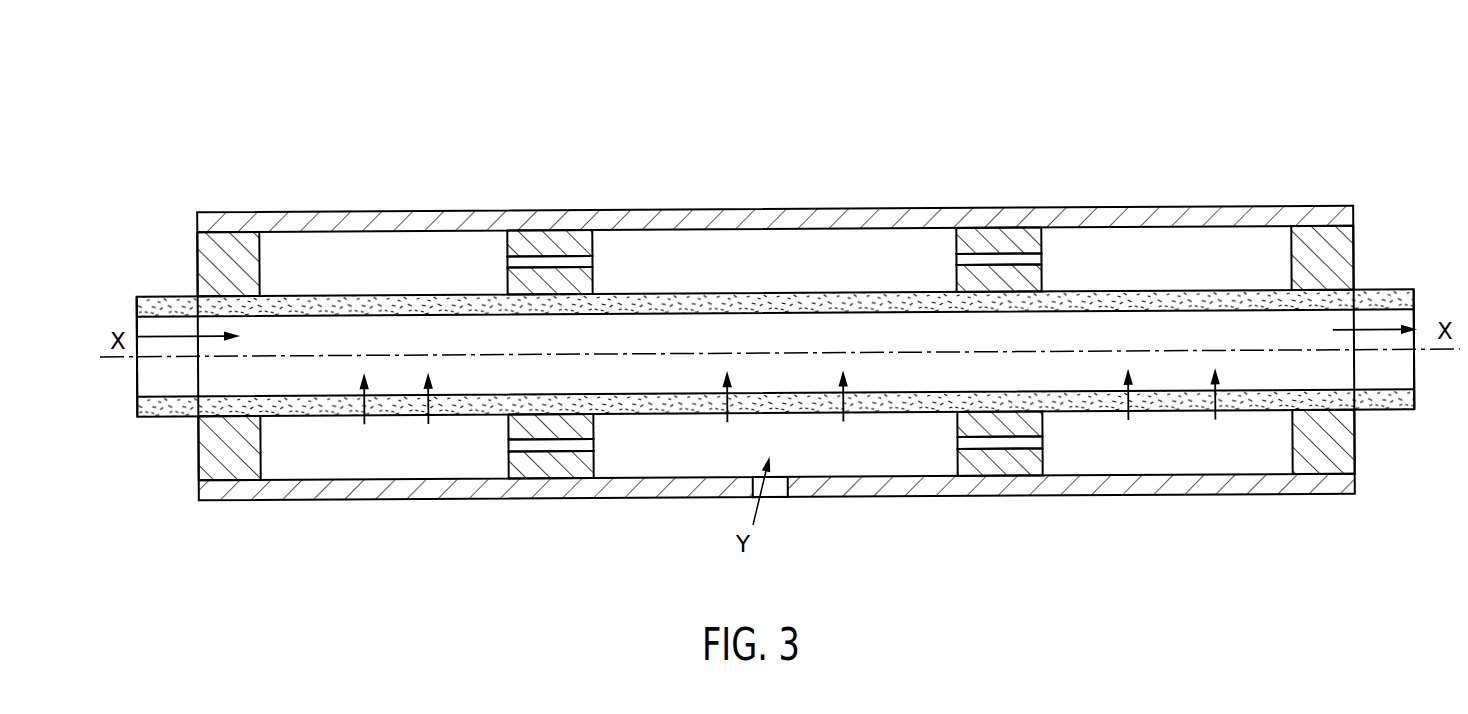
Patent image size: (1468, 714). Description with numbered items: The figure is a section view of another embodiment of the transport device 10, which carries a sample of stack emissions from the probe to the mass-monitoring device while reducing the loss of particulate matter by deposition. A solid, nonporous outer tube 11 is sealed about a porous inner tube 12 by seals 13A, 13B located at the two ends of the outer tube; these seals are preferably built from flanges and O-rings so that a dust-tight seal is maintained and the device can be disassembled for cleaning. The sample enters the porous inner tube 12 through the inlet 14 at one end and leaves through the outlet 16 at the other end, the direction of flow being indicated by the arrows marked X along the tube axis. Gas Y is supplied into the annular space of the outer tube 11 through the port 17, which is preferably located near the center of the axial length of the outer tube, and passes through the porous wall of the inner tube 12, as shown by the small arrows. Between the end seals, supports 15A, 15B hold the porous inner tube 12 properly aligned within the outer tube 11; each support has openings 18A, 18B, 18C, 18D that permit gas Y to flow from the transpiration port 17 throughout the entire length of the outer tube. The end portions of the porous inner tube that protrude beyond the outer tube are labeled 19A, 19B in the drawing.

The transport device 10 is at (818, 117).
The outer tube 11 is at (720, 218).
The porous inner tube 12 is at (772, 292).
The seal 13A is at (240, 243).
The seal 13B is at (1320, 238).
The inlet 14 is at (137, 327).
The support 15A is at (535, 240).
The support 15B is at (1015, 240).
The outlet 16 is at (1414, 318).
The port 17 is at (775, 497).
The opening 18A is at (518, 263).
The opening 18B is at (530, 441).
The opening 18C is at (980, 258).
The opening 18D is at (1020, 438).
The inner tube inlet portion 19A is at (155, 415).
The inner tube outlet portion 19B is at (1393, 410).